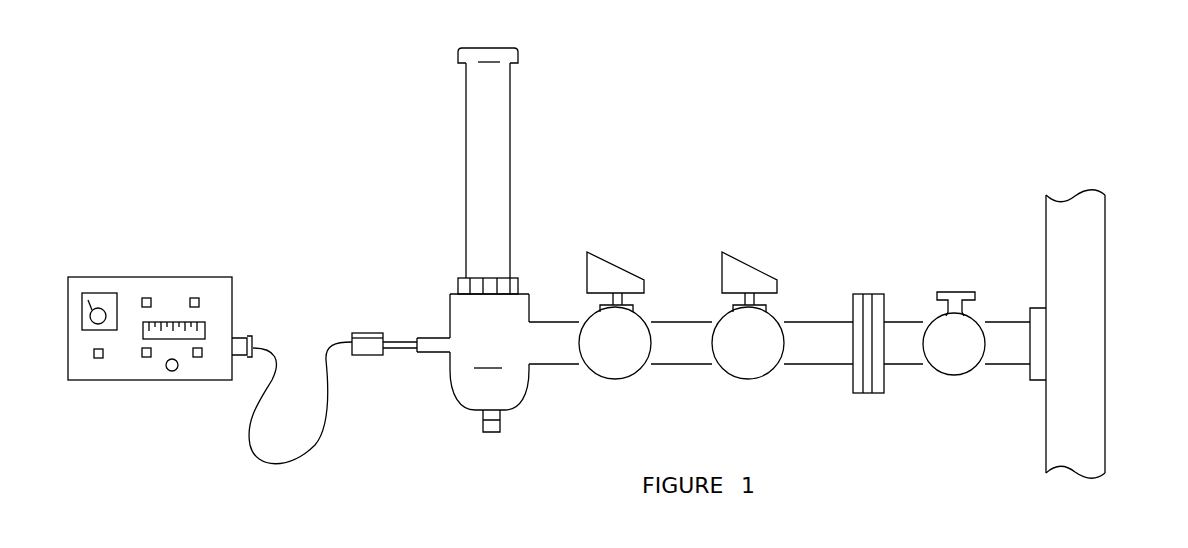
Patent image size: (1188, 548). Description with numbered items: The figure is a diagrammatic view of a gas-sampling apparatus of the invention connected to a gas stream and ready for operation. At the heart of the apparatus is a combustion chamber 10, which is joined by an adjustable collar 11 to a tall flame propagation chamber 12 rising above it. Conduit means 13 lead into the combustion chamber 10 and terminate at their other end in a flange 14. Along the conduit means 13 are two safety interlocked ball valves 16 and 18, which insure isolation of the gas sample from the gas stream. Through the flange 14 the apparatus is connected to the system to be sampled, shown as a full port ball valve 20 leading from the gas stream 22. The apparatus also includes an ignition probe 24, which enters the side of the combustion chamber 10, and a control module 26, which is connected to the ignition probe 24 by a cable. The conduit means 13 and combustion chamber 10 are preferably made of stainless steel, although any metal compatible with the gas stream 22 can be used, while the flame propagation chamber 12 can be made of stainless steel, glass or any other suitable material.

The combustion chamber 10 is at (489, 363).
The adjustable collar 11 is at (517, 288).
The flame propagation chamber 12 is at (502, 145).
The conduit means 13 is at (690, 322).
The flange 14 is at (858, 292).
The safety interlocked ball valve 16 is at (612, 282).
The safety interlocked ball valve 18 is at (760, 280).
The full port ball valve 20 is at (957, 290).
The gas stream 22 is at (1083, 262).
The ignition probe 24 is at (377, 343).
The control module 26 is at (222, 292).